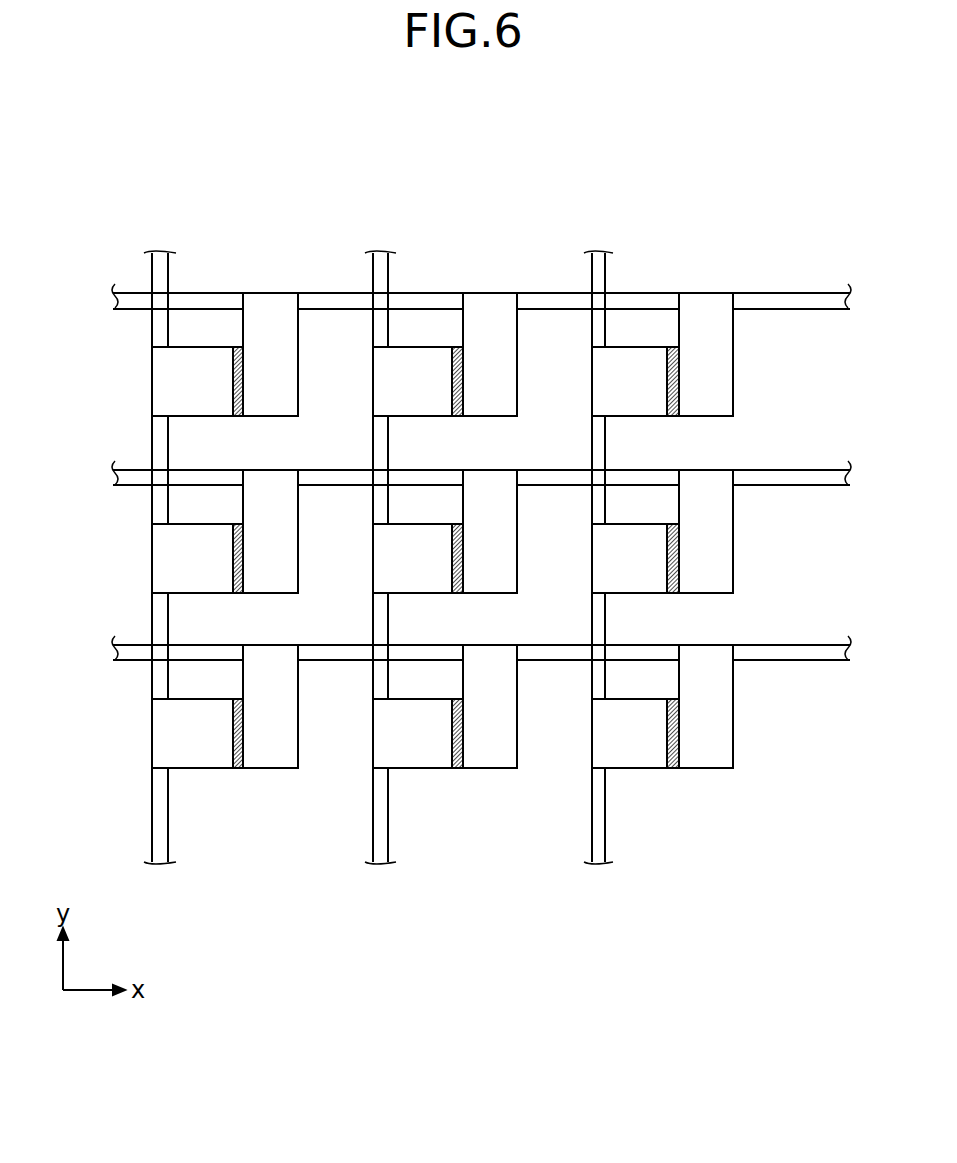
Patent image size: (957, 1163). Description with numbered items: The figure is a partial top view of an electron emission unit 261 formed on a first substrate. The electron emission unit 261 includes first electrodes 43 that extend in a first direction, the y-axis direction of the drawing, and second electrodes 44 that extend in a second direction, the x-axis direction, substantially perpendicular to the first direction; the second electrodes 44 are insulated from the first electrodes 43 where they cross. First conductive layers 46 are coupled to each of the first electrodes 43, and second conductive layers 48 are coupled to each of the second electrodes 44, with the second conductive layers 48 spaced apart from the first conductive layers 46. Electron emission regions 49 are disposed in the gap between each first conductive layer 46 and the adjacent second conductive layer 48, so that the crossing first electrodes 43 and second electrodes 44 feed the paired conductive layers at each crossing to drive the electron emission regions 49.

The electron emission unit 261 is at (720, 252).
The first electrodes 43 is at (159, 264).
The second electrodes 44 is at (818, 310).
The first conductive layers 46 is at (410, 753).
The second conductive layers 48 is at (497, 739).
The electron emission regions 49 is at (456, 769).